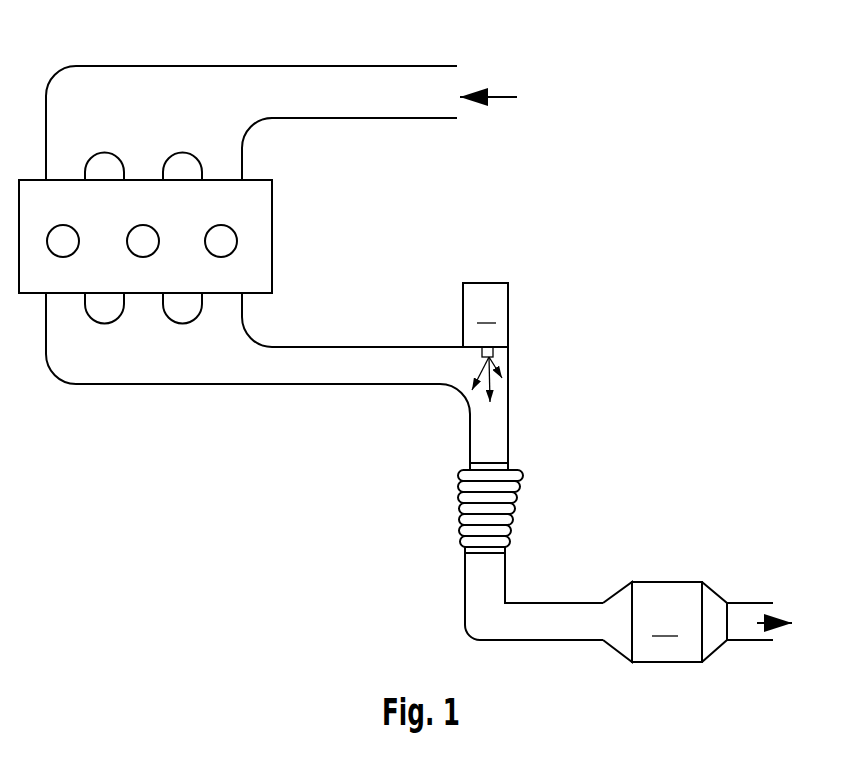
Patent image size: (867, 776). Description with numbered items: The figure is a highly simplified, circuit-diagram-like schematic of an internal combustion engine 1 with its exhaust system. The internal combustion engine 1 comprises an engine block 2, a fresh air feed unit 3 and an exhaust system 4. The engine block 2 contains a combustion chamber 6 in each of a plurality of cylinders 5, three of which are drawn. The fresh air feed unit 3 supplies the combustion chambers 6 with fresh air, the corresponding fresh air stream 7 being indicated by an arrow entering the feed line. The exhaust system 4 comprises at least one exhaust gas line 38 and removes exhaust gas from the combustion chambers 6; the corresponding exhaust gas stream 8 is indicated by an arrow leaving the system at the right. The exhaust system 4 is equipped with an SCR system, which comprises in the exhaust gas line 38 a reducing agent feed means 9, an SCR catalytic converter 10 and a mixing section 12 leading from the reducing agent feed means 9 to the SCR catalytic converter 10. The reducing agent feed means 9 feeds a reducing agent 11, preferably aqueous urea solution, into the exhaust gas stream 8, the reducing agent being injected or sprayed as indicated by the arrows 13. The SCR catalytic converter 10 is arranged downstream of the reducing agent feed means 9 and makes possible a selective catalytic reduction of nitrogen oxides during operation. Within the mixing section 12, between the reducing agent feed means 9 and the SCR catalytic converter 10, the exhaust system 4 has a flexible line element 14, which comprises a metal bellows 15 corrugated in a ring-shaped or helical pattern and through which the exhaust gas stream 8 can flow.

The internal combustion engine 1 is at (612, 155).
The engine block 2 is at (272, 233).
The fresh air feed unit 3 is at (303, 70).
The exhaust system 4 is at (323, 345).
The cylinder 5 is at (75, 233).
The combustion chamber 6 is at (67, 240).
The fresh air stream 7 is at (485, 97).
The exhaust gas stream 8 is at (786, 612).
The reducing agent feed means 9 is at (509, 300).
The SCR catalytic converter 10 is at (688, 622).
The reducing agent 11 is at (485, 320).
The mixing section 12 is at (503, 572).
The arrows 13 is at (490, 360).
The flexible line element 14 is at (458, 500).
The metal bellows 15 is at (572, 483).
The exhaust gas line 38 is at (350, 385).